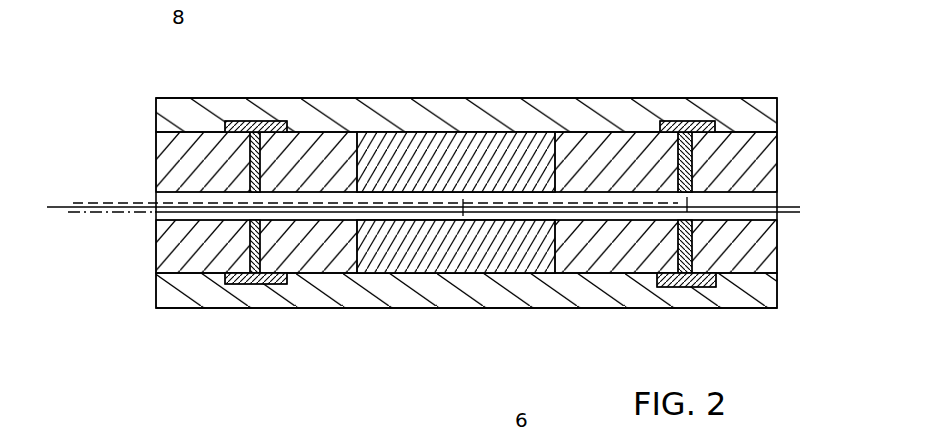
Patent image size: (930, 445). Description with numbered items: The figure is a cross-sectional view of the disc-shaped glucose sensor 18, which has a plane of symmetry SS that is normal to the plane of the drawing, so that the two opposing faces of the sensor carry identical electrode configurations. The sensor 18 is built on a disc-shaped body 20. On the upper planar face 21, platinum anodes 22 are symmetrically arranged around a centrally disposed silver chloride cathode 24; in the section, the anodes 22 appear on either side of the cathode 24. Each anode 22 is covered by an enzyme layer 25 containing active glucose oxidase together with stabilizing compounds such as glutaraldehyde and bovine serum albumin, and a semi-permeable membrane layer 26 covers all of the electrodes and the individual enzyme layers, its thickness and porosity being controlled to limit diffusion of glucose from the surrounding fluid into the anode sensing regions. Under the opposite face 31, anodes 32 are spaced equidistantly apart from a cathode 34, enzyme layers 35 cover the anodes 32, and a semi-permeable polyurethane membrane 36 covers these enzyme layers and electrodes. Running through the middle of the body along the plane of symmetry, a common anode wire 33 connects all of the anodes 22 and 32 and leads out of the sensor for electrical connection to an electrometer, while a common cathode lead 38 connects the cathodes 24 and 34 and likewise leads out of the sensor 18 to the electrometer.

The sensor 18 is at (772, 72).
The disc-shaped body 20 is at (777, 170).
The planar face 21 is at (603, 99).
The platinum anode 22 is at (250, 158).
The silver chloride cathode 24 is at (520, 135).
The enzyme layer 25 is at (258, 124).
The semi-permeable membrane layer 26 is at (372, 99).
The face 31 is at (620, 308).
The anode 32 is at (252, 242).
The common anode wire 33 is at (124, 200).
The cathode 34 is at (512, 275).
The enzyme layer 35 is at (252, 286).
The semi-permeable polyurethane membrane 36 is at (372, 308).
The common cathode lead 38 is at (100, 214).
The plane of symmetry SS is at (57, 208).